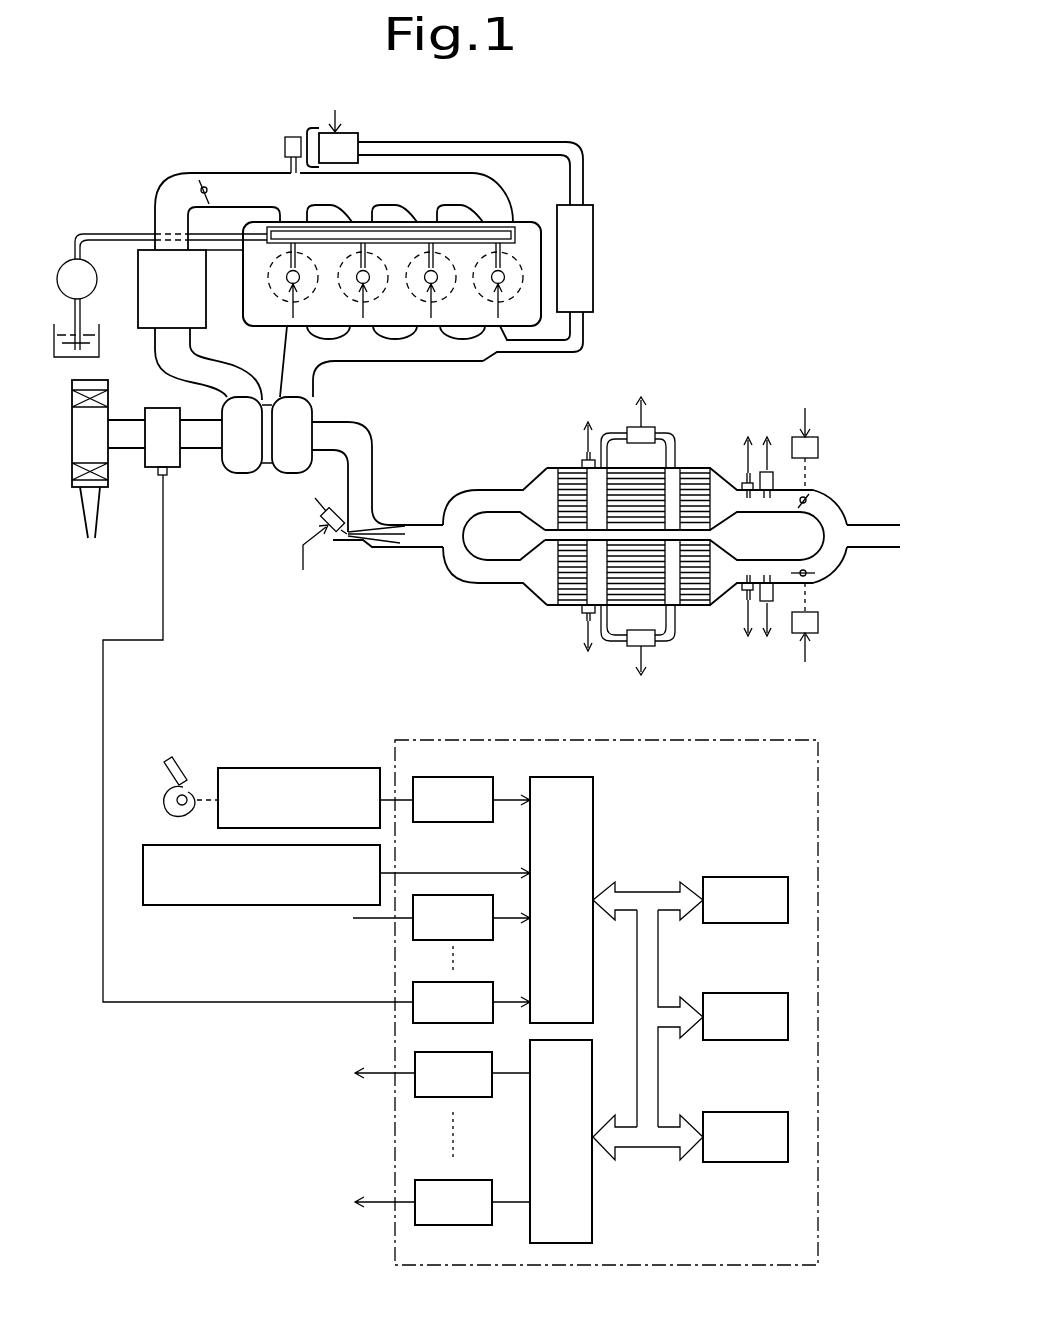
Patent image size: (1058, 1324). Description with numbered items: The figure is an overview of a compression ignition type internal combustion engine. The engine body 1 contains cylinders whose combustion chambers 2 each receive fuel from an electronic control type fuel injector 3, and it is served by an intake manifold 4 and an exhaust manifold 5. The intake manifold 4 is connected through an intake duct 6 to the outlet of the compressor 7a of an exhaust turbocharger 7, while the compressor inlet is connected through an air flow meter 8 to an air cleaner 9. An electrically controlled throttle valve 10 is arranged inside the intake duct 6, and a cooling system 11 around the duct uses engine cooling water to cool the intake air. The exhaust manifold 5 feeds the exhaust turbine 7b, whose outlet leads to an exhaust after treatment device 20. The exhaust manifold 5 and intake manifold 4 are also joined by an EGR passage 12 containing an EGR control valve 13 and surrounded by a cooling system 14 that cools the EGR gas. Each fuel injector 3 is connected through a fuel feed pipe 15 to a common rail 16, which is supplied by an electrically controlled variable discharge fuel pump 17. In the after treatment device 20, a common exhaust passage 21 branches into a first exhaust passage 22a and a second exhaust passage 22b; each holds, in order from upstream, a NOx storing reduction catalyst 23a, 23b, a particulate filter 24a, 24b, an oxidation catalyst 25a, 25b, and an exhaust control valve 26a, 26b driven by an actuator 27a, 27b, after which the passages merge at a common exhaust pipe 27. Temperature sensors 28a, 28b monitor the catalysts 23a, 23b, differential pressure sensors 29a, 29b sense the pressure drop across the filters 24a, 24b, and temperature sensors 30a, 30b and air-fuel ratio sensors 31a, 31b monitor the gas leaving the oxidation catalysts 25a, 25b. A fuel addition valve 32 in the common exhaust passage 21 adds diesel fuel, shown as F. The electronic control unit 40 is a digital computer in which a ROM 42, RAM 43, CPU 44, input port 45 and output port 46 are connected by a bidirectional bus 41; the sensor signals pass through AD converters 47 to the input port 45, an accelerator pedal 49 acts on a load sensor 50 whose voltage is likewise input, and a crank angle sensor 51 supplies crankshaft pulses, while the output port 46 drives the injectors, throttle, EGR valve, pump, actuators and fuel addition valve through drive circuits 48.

The engine body 1 is at (543, 216).
The combustion chamber 2 is at (386, 288).
The fuel injector 3 is at (283, 277).
The intake manifold 4 is at (473, 193).
The exhaust manifold 5 is at (480, 349).
The intake duct 6 is at (166, 195).
The exhaust turbocharger 7 is at (233, 441).
The compressor 7a is at (238, 462).
The exhaust turbine 7b is at (293, 465).
The air flow meter 8 is at (155, 460).
The air cleaner 9 is at (72, 420).
The throttle valve 10 is at (201, 188).
The cooling system 11 is at (148, 268).
The EGR passage 12 is at (542, 148).
The EGR control valve 13 is at (293, 140).
The cooling system 14 is at (594, 250).
The fuel feed pipe 15 is at (289, 258).
The common rail 16 is at (432, 238).
The fuel pump 17 is at (62, 270).
The exhaust after treatment device 20 is at (469, 478).
The common exhaust passage 21 is at (362, 476).
The first exhaust passage 22a is at (507, 493).
The second exhaust passage 22b is at (502, 577).
The first NOx storing reduction catalyst 23a is at (568, 480).
The second NOx storing reduction catalyst 23b is at (570, 595).
The first particulate filter 24a is at (652, 478).
The second particulate filter 24b is at (652, 595).
The first oxidation catalyst 25a is at (695, 480).
The second oxidation catalyst 25b is at (695, 595).
The first exhaust control valve 26a is at (810, 495).
The second exhaust control valve 26b is at (812, 574).
The common exhaust pipe 27 is at (868, 525).
The actuator 27a is at (818, 450).
The actuator 27b is at (818, 622).
The temperature sensor 28a is at (580, 447).
The temperature sensor 28b is at (582, 615).
The first differential pressure sensor 29a is at (648, 425).
The second differential pressure sensor 29b is at (650, 647).
The temperature sensor 30a is at (740, 483).
The temperature sensor 30b is at (740, 590).
The air-fuel ratio sensor 31a is at (774, 484).
The air-fuel ratio sensor 31b is at (774, 601).
The fuel addition valve 32 is at (331, 540).
The fuel F is at (390, 541).
The electronic control unit 40 is at (836, 770).
The bidirectional bus 41 is at (653, 893).
The ROM 42 is at (745, 877).
The RAM 43 is at (742, 993).
The CPU 44 is at (752, 1112).
The input port 45 is at (557, 777).
The output port 46 is at (593, 1218).
The AD converter 47 is at (440, 776).
The drive circuit 48 is at (430, 1178).
The accelerator pedal 49 is at (186, 760).
The load sensor 50 is at (301, 768).
The crank angle sensor 51 is at (218, 905).